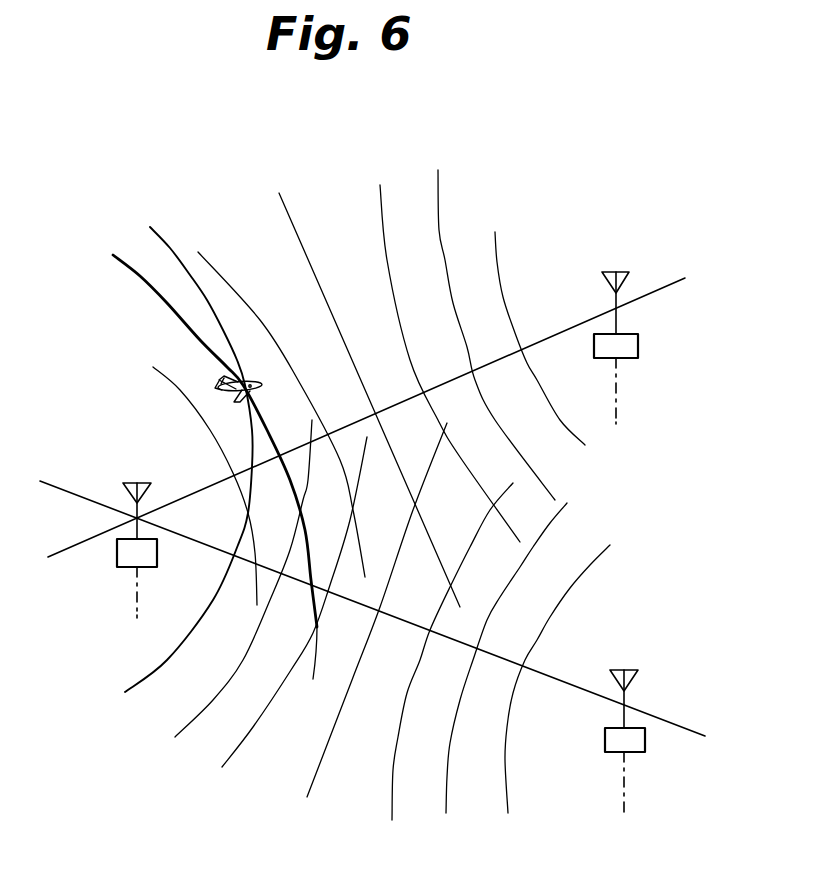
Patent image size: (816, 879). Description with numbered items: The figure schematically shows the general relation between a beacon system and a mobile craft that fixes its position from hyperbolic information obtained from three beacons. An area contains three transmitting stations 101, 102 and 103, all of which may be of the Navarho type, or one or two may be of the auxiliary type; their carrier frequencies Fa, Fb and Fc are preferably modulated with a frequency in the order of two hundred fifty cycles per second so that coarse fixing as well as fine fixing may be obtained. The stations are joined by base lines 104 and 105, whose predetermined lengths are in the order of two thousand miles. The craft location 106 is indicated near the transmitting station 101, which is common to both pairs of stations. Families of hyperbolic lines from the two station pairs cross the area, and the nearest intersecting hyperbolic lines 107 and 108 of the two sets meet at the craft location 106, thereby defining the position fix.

The transmitting station 101 is at (129, 483).
The transmitting station 102 is at (612, 272).
The transmitting station 103 is at (650, 656).
The base line 104 is at (533, 343).
The base line 105 is at (548, 676).
The craft location 106 is at (236, 385).
The hyperbolic line 107 is at (133, 271).
The hyperbolic line 108 is at (166, 238).